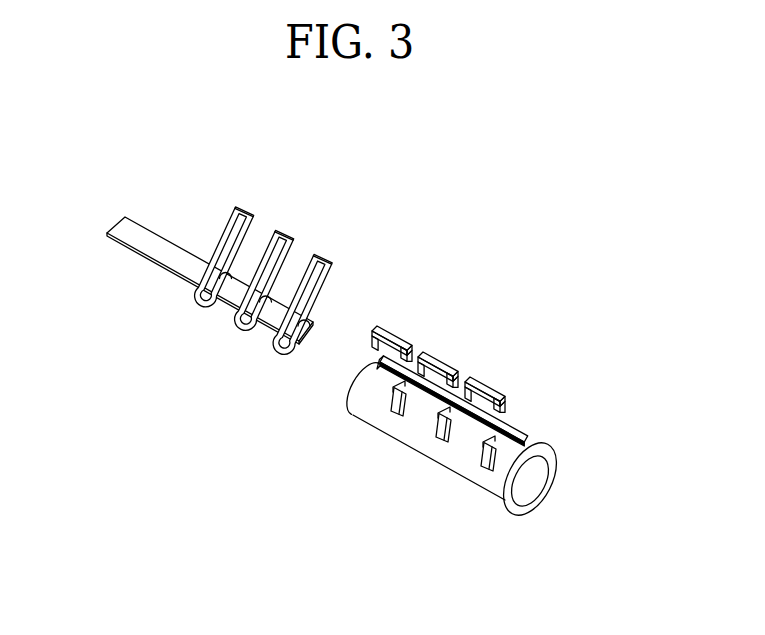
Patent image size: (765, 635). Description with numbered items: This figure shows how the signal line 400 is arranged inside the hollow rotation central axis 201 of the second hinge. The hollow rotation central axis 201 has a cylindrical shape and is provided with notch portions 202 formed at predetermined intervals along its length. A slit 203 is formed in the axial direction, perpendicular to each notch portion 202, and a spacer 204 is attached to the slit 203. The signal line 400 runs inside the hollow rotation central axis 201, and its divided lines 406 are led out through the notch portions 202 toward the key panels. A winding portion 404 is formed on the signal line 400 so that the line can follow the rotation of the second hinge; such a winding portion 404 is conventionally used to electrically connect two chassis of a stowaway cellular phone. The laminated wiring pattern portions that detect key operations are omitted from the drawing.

The hollow rotation central axis 201 is at (542, 438).
The notch portions 202 is at (388, 410).
The slit 203 is at (378, 362).
The spacer 204 is at (523, 392).
The signal line 400 is at (159, 245).
The winding portion 404 is at (207, 274).
The divided lines 406 is at (348, 257).